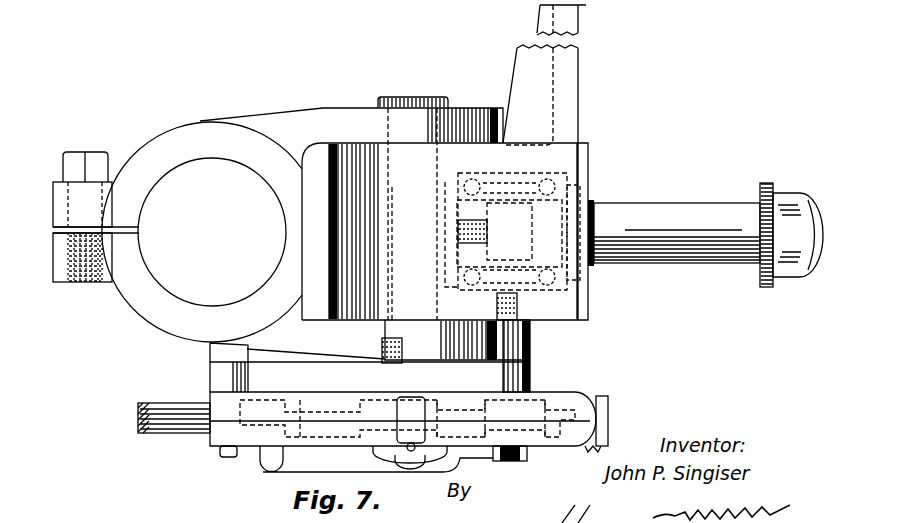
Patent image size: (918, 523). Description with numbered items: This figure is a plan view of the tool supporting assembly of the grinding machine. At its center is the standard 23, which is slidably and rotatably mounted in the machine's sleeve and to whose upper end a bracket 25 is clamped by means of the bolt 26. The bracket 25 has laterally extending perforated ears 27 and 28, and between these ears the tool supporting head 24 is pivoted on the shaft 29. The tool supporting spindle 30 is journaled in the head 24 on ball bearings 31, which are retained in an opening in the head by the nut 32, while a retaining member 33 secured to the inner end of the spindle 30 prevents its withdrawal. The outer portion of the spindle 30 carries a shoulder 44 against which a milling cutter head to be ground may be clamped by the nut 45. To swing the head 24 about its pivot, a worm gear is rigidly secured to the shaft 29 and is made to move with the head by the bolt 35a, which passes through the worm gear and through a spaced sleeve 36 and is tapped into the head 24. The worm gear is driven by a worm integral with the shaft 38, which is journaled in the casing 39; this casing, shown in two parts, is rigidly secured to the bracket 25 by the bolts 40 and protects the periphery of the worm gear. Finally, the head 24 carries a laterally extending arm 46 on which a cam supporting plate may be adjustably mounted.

The standard 23 is at (162, 268).
The tool supporting head 24 is at (448, 158).
The bracket 25 is at (147, 145).
The bolt 26 is at (88, 152).
The perforated ear 27 is at (341, 112).
The perforated ear 28 is at (322, 331).
The shaft 29 is at (430, 86).
The tool supporting spindle 30 is at (705, 210).
The ball bearings 31 is at (543, 178).
The nut 32 is at (585, 183).
The retaining member 33 is at (456, 258).
The bolt 35a is at (506, 463).
The spaced sleeve 36 is at (531, 363).
The shaft 38 is at (173, 433).
The casing 39 is at (583, 400).
The bolts 40 is at (228, 453).
The shoulder 44 is at (596, 205).
The nut 45 is at (786, 199).
The arm 46 is at (571, 86).